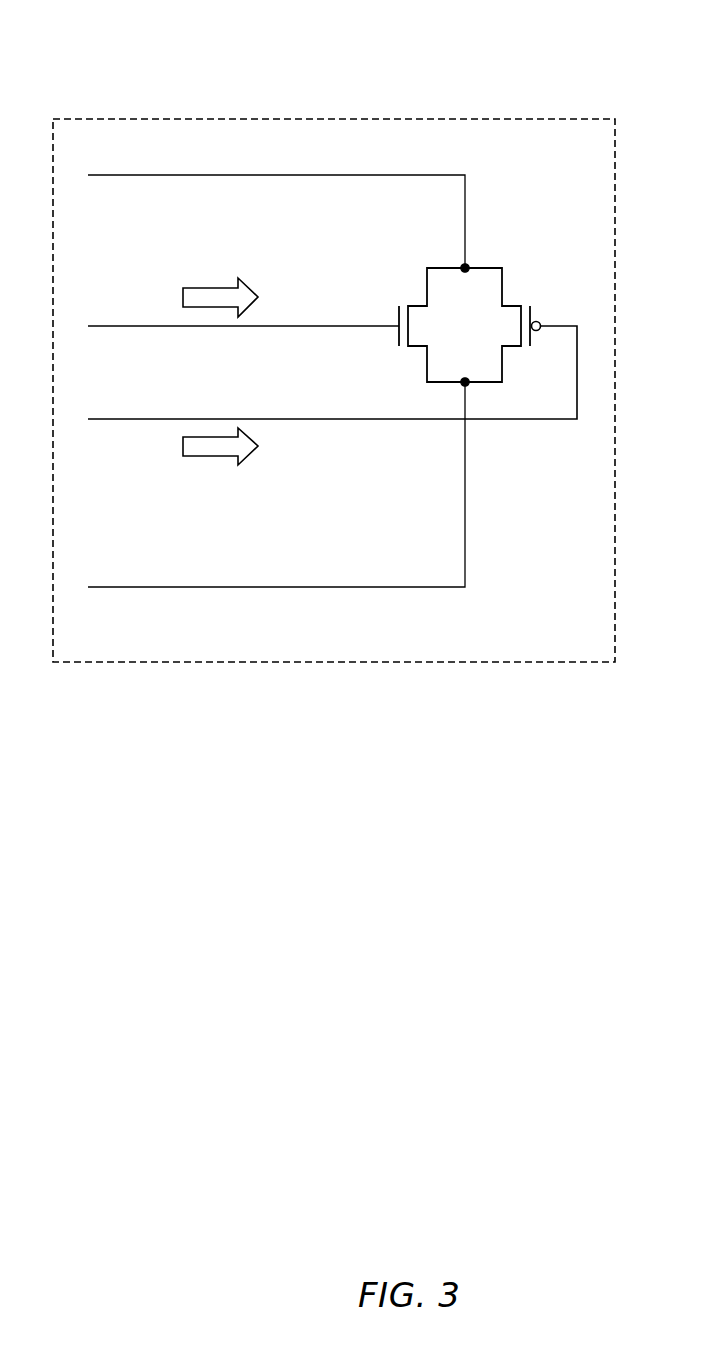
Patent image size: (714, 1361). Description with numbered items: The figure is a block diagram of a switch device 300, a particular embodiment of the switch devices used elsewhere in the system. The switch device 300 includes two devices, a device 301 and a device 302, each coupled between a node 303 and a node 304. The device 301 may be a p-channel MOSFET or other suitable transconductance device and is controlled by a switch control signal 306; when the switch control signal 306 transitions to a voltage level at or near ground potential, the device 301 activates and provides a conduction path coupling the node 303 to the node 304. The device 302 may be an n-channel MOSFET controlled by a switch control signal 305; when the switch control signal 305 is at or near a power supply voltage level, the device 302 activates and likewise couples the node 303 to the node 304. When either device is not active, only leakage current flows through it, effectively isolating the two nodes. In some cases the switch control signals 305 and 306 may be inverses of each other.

The switch device 300 is at (391, 118).
The device 301 is at (527, 303).
The device 302 is at (407, 303).
The node 303 is at (276, 209).
The node 304 is at (276, 498).
The switch control signal 305 is at (212, 288).
The switch control signal 306 is at (207, 458).